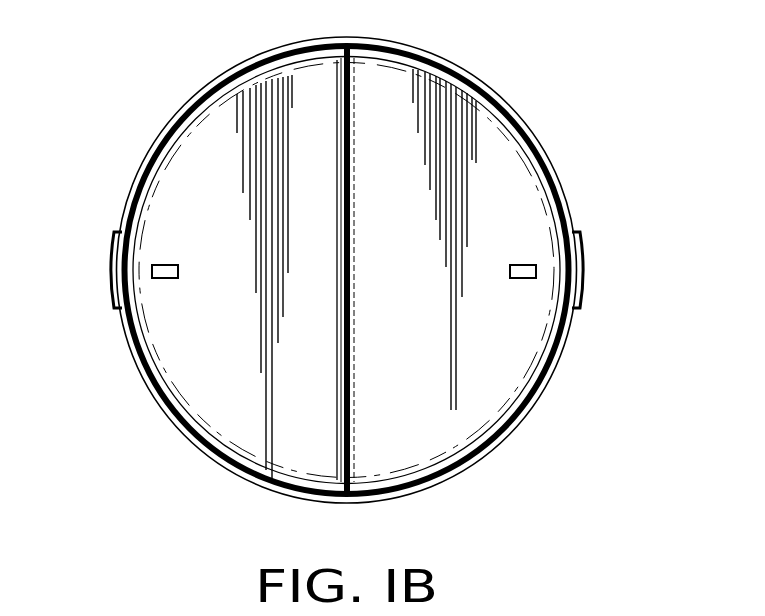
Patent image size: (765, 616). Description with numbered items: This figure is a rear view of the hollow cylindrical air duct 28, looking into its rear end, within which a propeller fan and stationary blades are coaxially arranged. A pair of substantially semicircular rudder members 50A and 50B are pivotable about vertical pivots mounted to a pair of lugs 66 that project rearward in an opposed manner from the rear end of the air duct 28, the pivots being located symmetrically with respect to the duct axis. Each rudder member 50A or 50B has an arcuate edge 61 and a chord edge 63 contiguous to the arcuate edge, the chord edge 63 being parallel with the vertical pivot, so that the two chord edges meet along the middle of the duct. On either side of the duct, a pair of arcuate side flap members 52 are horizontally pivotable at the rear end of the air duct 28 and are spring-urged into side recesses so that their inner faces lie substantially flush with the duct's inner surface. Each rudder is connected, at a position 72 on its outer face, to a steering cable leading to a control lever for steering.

The air duct 28 is at (538, 137).
The rudder member 50A is at (268, 386).
The rudder member 50B is at (449, 414).
The side flap member 52 is at (117, 268).
The arcuate edge 61 is at (170, 412).
The chord edge 63 is at (348, 162).
The lug 66 is at (393, 45).
The connection position 72 is at (167, 265).